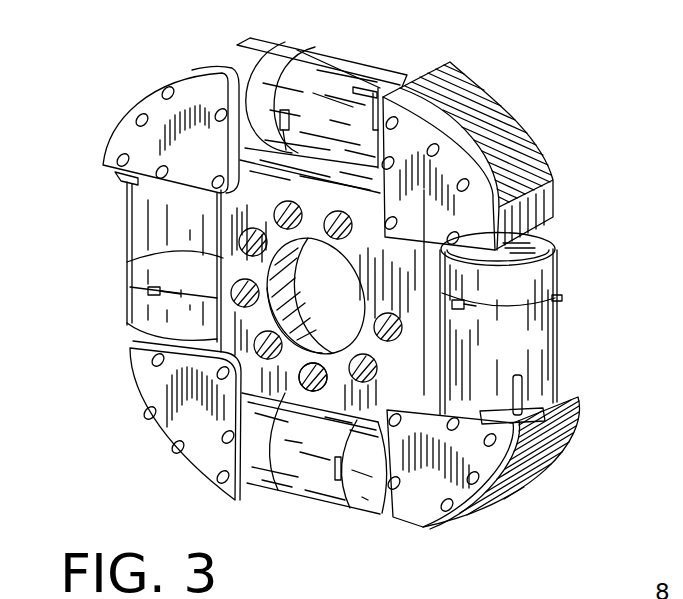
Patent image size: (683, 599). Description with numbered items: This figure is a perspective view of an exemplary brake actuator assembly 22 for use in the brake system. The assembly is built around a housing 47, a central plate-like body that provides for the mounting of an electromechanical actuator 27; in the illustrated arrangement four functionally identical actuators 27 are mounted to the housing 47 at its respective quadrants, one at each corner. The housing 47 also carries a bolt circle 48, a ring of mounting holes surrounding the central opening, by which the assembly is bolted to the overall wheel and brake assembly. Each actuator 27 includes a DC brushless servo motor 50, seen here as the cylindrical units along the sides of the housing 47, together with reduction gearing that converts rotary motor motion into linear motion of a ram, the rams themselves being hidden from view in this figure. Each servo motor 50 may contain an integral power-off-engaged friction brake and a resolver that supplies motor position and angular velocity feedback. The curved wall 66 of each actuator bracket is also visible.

The brake actuator assembly 22 is at (163, 58).
The electromechanical actuator 27 is at (133, 113).
The housing 47 is at (127, 262).
The bolt circle 48 is at (292, 384).
The DC brushless servo motor 50 is at (129, 200).
The curved wall 66 is at (460, 83).